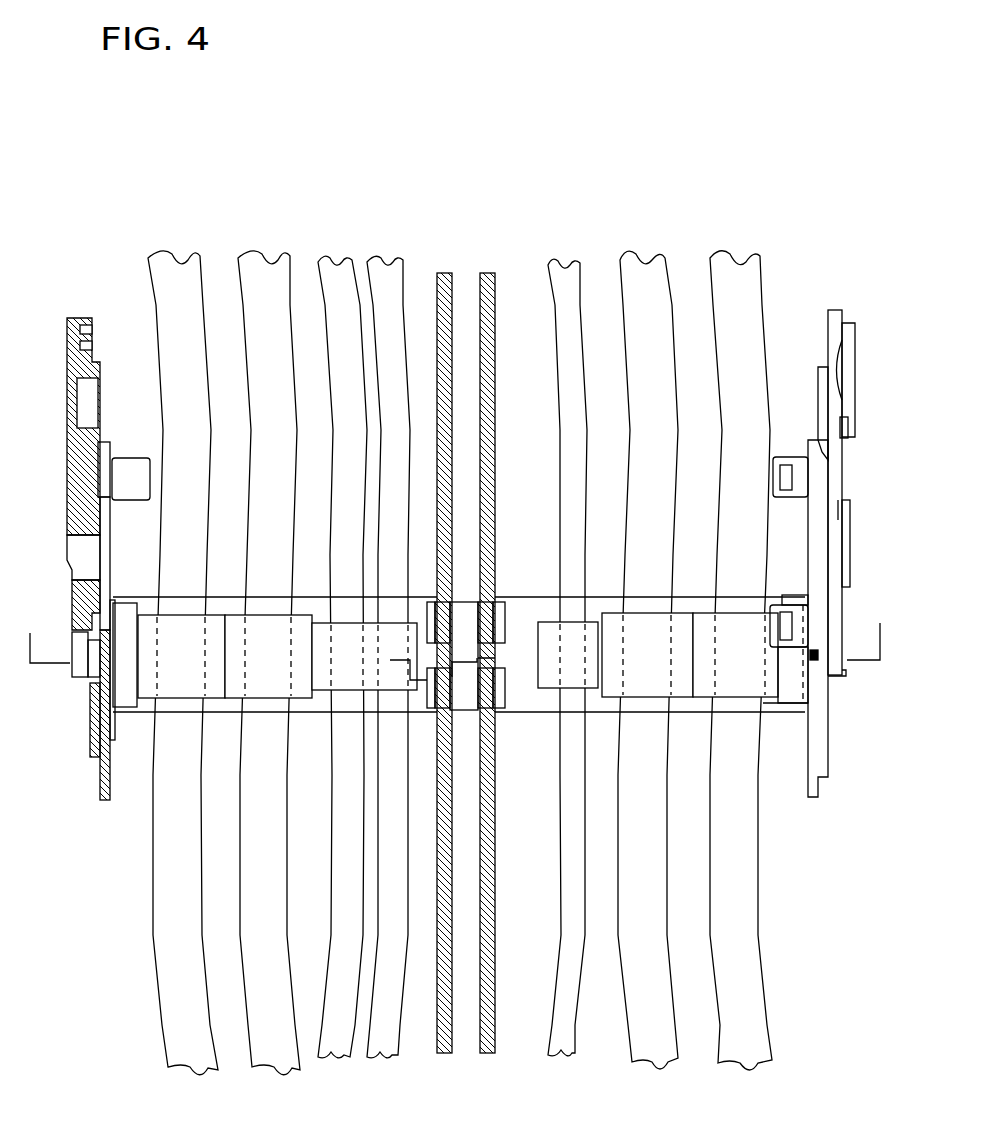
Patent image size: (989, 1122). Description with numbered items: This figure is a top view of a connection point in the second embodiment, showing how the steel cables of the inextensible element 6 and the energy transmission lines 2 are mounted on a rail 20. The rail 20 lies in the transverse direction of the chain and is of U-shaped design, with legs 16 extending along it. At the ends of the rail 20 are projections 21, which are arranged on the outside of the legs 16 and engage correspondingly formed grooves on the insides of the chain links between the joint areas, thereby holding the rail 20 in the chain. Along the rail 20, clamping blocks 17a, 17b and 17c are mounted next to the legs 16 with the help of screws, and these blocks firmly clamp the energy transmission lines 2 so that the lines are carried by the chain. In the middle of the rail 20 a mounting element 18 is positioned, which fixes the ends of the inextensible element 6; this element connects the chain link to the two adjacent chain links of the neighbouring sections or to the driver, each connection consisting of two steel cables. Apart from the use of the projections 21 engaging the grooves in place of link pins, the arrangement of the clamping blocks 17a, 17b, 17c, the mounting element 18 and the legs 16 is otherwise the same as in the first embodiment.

The energy transmission lines 2 is at (263, 283).
The inextensible element 6 is at (492, 283).
The legs 16 is at (125, 625).
The clamping block 17a is at (458, 655).
The clamping block 17b is at (369, 656).
The clamping block 17c is at (568, 655).
The mounting element 18 is at (460, 622).
The rail 20 is at (523, 570).
The projections 21 is at (92, 677).